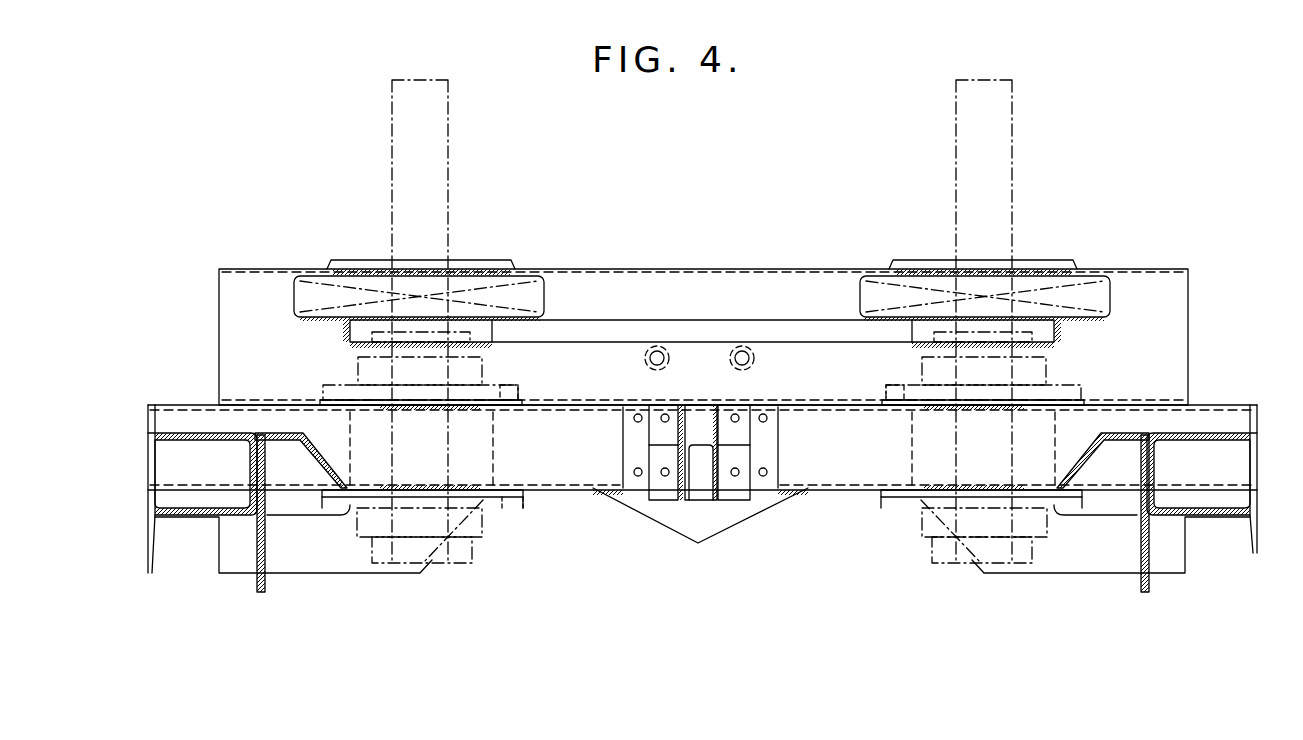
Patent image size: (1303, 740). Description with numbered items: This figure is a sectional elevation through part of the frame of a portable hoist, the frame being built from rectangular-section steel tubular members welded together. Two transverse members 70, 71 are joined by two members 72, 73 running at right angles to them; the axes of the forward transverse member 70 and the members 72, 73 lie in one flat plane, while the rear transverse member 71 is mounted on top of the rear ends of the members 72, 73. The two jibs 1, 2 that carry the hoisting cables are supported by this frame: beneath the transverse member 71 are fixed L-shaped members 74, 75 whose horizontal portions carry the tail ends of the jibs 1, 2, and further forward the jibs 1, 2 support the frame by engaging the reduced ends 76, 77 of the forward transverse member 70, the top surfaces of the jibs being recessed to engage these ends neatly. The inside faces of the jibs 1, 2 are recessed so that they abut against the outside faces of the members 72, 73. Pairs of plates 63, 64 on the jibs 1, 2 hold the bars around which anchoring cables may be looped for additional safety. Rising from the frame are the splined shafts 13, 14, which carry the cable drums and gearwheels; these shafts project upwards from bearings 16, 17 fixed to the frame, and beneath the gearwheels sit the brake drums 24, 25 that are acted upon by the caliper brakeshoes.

The jib 1 is at (195, 495).
The jib 2 is at (1203, 498).
The splined shaft 13 is at (435, 190).
The splined shaft 14 is at (985, 190).
The bearing 16 is at (355, 368).
The bearing 17 is at (1043, 372).
The brake drum 24 is at (320, 297).
The brake drum 25 is at (1097, 297).
The plate 63 is at (257, 562).
The plate 64 is at (1252, 553).
The forward transverse member 70 is at (578, 470).
The transverse member 71 is at (614, 268).
The frame member 72 is at (495, 450).
The frame member 73 is at (910, 447).
The L-shaped member 74 is at (370, 573).
The L-shaped member 75 is at (1060, 540).
The reduced end 76 is at (190, 415).
The reduced end 77 is at (1205, 415).